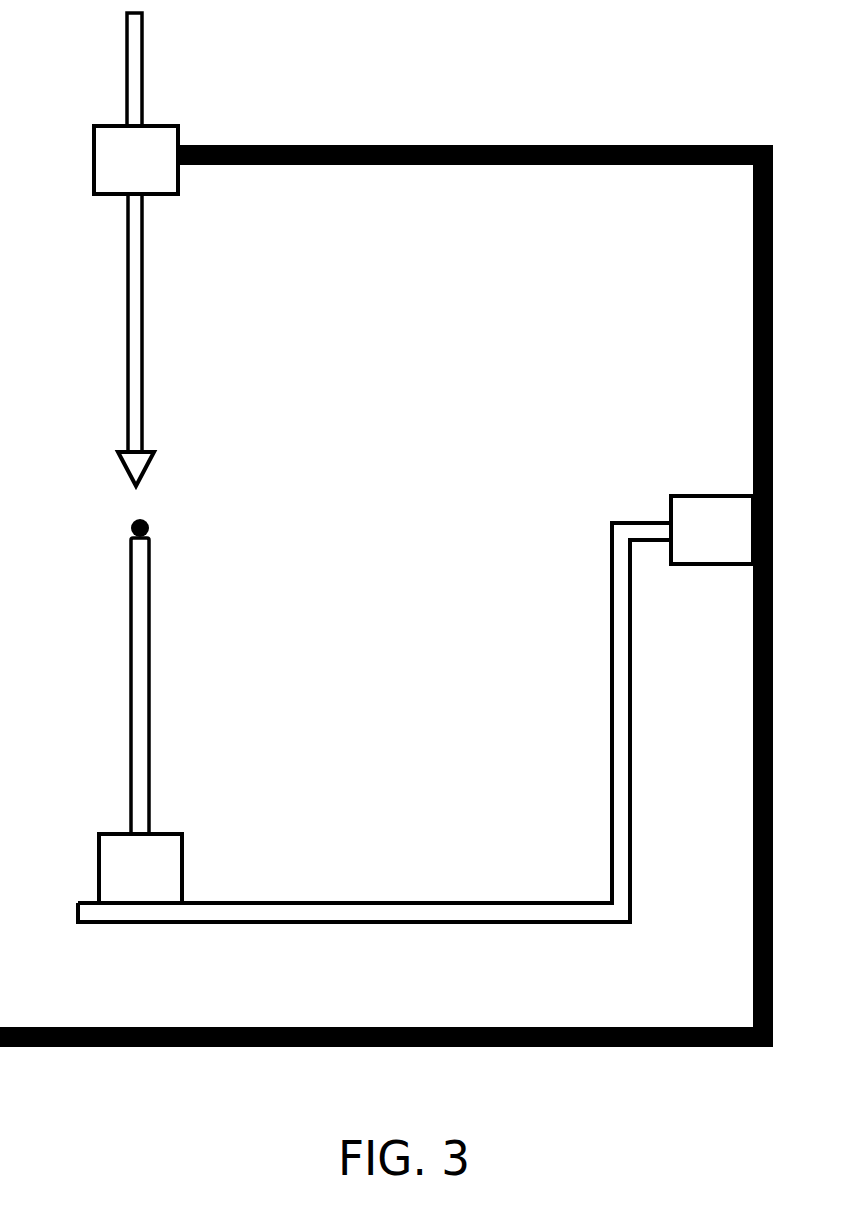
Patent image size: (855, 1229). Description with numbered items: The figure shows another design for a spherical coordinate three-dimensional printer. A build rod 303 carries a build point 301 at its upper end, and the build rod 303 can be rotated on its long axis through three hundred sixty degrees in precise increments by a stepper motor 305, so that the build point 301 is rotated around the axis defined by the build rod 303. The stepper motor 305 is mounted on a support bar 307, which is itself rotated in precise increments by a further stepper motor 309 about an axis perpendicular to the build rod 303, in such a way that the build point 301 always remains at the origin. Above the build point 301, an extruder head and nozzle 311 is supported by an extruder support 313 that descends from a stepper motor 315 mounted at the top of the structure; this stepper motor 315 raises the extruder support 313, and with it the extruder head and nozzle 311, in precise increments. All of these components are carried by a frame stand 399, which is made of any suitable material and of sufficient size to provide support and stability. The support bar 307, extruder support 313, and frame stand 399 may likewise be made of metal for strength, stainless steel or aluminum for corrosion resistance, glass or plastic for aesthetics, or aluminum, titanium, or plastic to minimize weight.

The build point 301 is at (118, 528).
The build rod 303 is at (119, 685).
The stepper motor 305 is at (121, 868).
The support bar 307 is at (374, 722).
The stepper motor 309 is at (712, 519).
The extruder head and nozzle 311 is at (118, 469).
The extruder support 313 is at (115, 232).
The stepper motor 315 is at (117, 160).
The frame stand 399 is at (386, 596).